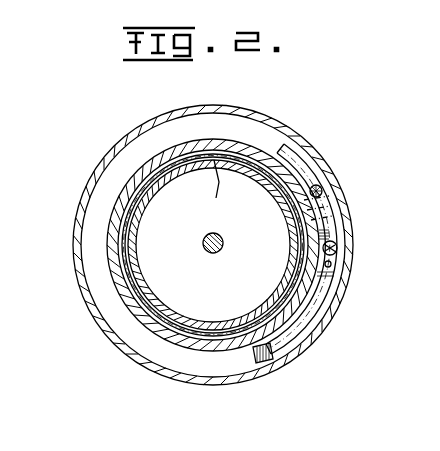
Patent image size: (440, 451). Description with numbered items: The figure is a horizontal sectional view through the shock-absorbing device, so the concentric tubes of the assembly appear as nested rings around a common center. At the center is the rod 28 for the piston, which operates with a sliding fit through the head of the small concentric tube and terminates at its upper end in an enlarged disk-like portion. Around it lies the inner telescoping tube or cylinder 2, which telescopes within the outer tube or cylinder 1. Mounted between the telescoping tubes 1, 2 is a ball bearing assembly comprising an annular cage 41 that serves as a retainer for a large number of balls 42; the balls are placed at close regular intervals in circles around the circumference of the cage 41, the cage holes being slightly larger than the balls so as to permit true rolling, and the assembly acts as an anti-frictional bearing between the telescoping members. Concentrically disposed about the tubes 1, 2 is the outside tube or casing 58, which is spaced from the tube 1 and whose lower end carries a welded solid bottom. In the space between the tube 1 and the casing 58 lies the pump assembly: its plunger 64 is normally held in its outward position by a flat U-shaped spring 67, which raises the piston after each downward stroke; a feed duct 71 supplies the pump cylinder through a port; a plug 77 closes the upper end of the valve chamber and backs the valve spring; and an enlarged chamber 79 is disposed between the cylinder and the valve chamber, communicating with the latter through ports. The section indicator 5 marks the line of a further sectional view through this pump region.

The outer tube or cylinder 1 is at (103, 262).
The inner telescoping tube or cylinder 2 is at (140, 282).
The section line 5- 5 is at (289, 146).
The rod 28 is at (210, 244).
The annular cage 41 is at (168, 317).
The balls 42 is at (226, 191).
The outside tube or casing 58 is at (94, 321).
The plunger 64 is at (329, 239).
The U-shaped spring 67 is at (281, 335).
The feed duct 71 is at (323, 256).
The plug 77 is at (311, 181).
The enlarged chamber 79 is at (344, 202).